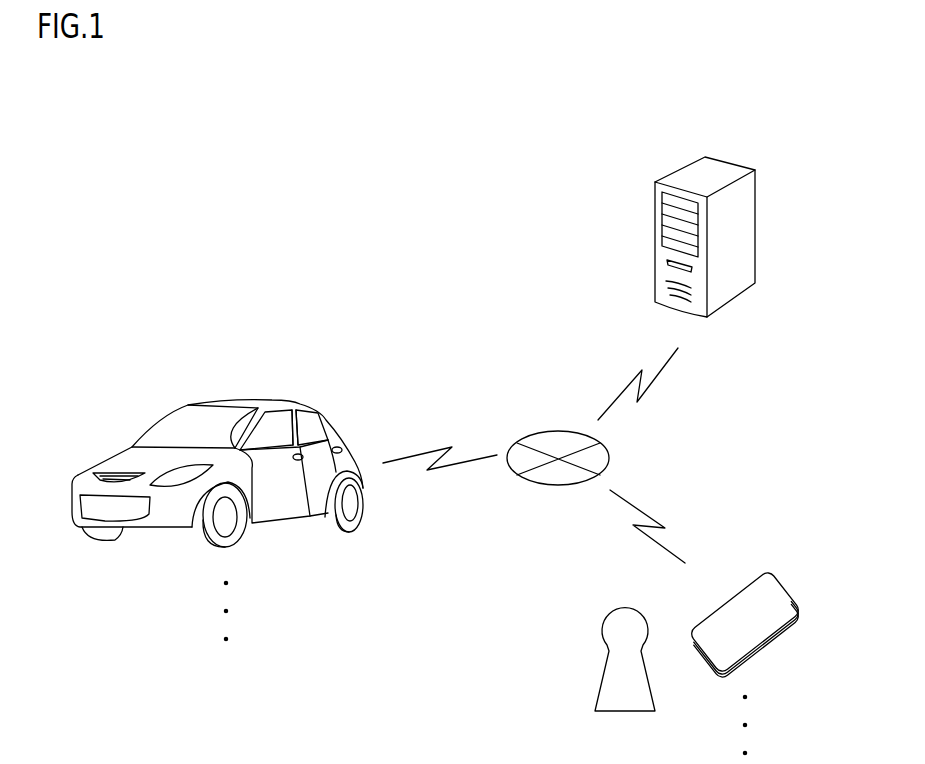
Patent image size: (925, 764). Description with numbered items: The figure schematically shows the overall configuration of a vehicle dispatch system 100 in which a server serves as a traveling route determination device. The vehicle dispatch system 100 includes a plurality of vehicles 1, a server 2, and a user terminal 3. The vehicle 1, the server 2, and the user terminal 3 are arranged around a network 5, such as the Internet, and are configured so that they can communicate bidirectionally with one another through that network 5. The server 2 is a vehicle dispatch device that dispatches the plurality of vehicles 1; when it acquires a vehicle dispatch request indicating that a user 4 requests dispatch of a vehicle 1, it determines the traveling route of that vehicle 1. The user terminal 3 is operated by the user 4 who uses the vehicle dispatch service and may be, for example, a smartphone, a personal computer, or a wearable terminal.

The vehicle dispatch system 100 is at (121, 120).
The vehicle 1 is at (278, 398).
The server 2 is at (722, 173).
The user terminal 3 is at (775, 597).
The user 4 is at (603, 626).
The network 5 is at (609, 455).